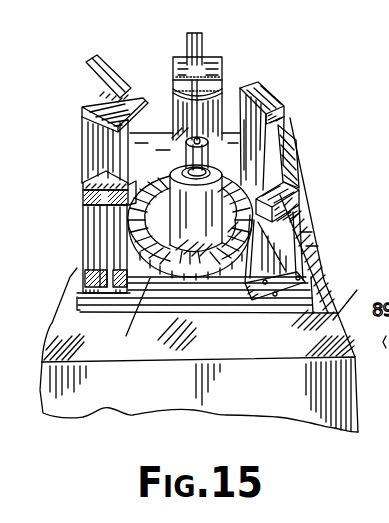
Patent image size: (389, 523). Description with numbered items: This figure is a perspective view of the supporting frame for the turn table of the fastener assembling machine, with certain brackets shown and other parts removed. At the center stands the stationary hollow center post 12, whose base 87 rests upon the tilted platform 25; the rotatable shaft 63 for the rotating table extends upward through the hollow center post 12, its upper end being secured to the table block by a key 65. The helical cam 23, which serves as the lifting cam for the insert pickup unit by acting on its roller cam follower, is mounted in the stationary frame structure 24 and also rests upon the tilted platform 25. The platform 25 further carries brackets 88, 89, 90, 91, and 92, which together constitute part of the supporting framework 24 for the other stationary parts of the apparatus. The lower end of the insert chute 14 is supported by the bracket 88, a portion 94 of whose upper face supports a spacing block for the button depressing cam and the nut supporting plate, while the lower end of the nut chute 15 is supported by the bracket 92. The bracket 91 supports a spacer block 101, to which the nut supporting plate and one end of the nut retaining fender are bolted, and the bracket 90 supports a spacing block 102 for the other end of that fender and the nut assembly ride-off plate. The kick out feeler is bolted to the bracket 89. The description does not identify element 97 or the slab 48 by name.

The insert chute 14 is at (88, 67).
The portion of the upper face of the bracket 94 is at (100, 96).
The bracket 88 is at (82, 128).
The key 65 is at (135, 160).
The bracket 89 is at (90, 230).
The base 87 is at (147, 232).
The helical cam 23 is at (199, 319).
The bracket 92 is at (173, 108).
The nut chute 15 is at (200, 45).
The collar band 97 is at (210, 82).
The rotatable shaft 63 is at (214, 165).
The spacer block 101 is at (265, 90).
The bracket 91 is at (285, 128).
The stationary hollow center post 12 is at (208, 205).
The spacing block 102 is at (292, 184).
The stationary frame structure 24 is at (305, 203).
The tilted platform 25 is at (293, 242).
The bracket 90 is at (278, 260).
The base slab 48 is at (211, 275).